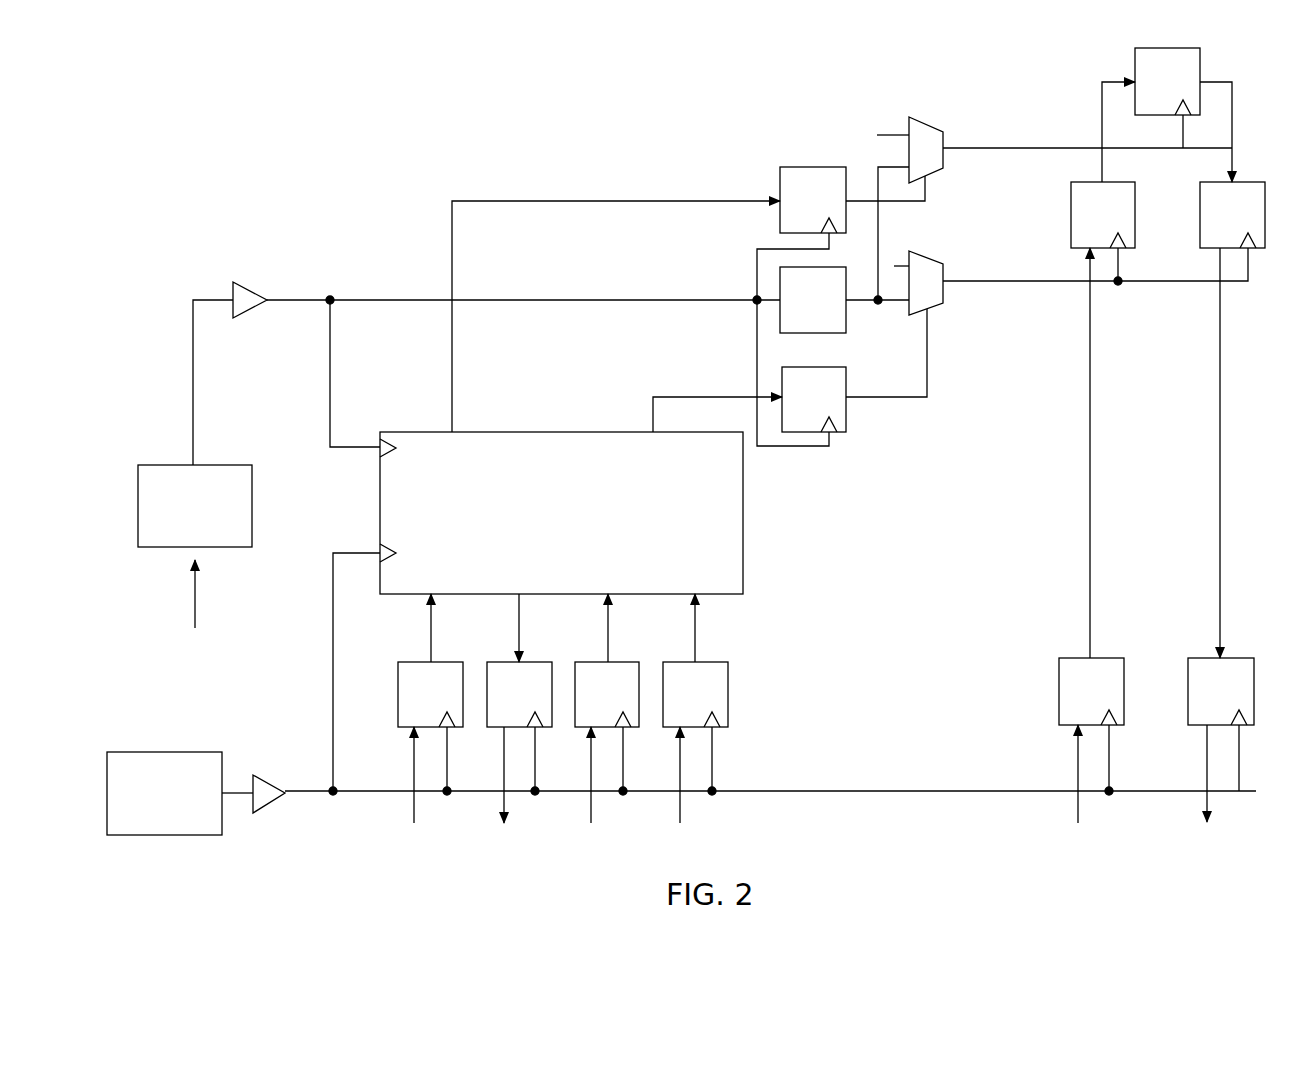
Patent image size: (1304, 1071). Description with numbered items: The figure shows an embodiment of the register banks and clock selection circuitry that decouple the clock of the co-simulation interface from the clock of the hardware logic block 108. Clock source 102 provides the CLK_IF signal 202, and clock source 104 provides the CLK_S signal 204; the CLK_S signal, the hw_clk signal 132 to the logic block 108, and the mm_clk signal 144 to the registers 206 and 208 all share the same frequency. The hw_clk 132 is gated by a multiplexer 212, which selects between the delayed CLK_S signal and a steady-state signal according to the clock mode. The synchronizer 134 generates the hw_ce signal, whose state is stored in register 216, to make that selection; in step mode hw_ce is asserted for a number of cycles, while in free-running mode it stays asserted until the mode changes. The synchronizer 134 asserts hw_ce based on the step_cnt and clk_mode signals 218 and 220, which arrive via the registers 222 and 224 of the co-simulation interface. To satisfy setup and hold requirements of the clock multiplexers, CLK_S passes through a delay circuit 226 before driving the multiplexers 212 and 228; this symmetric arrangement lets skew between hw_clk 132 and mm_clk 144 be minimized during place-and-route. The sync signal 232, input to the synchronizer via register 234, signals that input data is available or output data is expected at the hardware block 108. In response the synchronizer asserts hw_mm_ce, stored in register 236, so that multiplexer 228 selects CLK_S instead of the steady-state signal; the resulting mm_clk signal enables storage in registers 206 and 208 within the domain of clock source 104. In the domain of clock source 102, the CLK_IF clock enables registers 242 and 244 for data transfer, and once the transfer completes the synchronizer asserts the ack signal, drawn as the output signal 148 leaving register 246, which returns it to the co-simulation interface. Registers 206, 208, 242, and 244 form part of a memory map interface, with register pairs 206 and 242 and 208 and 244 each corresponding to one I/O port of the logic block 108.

The clock source 102 is at (155, 751).
The clock source 104 is at (218, 464).
The hardware block 108 is at (1202, 66).
The hw_clk signal 132 is at (1011, 151).
The synchronizer 134 is at (525, 431).
The mm_clk signal 144 is at (1011, 283).
The ack output signal 148 is at (498, 805).
The CLK_IF signal 202 is at (348, 791).
The CLK_S signal 204 is at (352, 299).
The register 206 is at (1081, 181).
The register 208 is at (1211, 181).
The multiplexer 212 is at (918, 128).
The register 216 is at (833, 165).
The step_cnt signal 218 is at (590, 812).
The clk_mode signal 220 is at (679, 810).
The register 222 is at (624, 661).
The register 224 is at (712, 661).
The delay circuit 226 is at (838, 334).
The multiplexer 228 is at (918, 262).
The sync signal 232 is at (413, 812).
The register 234 is at (448, 661).
The register 236 is at (848, 390).
The register 242 is at (1074, 657).
The register 244 is at (1204, 657).
The register 246 is at (536, 661).